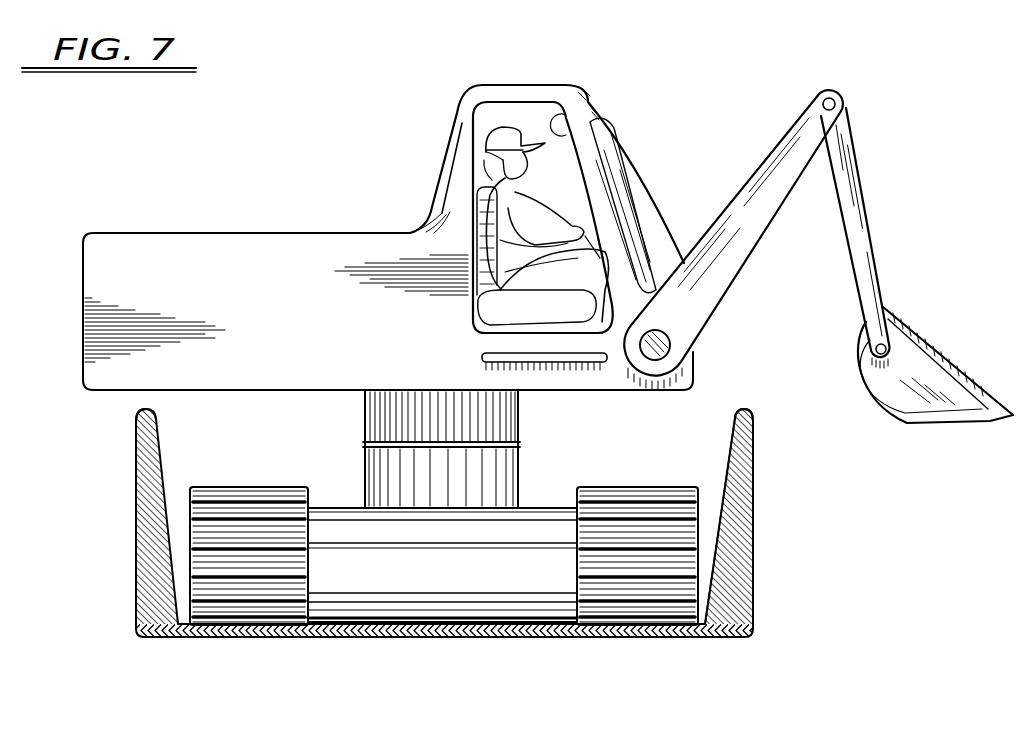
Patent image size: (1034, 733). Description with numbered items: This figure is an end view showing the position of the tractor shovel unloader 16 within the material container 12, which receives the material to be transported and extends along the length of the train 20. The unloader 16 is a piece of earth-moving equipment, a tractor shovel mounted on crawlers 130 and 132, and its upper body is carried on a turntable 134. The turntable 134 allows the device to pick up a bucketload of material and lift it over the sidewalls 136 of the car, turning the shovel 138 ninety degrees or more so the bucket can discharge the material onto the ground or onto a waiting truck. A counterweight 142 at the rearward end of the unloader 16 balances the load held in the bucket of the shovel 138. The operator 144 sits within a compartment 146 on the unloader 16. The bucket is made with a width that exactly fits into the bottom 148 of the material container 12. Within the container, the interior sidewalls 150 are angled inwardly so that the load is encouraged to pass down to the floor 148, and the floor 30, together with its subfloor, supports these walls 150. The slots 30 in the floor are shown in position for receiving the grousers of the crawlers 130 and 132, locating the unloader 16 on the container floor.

The material container 12 is at (760, 497).
The unloader 16 is at (642, 95).
The train 20 is at (240, 624).
The floor 30 is at (422, 627).
The crawler 130 is at (613, 613).
The crawler 132 is at (263, 607).
The turntable 134 is at (520, 467).
The sidewall 136 is at (743, 537).
The shovel 138 is at (882, 185).
The counterweight 142 is at (157, 233).
The operator 144 is at (545, 217).
The compartment 146 is at (575, 134).
The bottom 148 is at (917, 333).
The interior sidewalls 150 is at (160, 462).